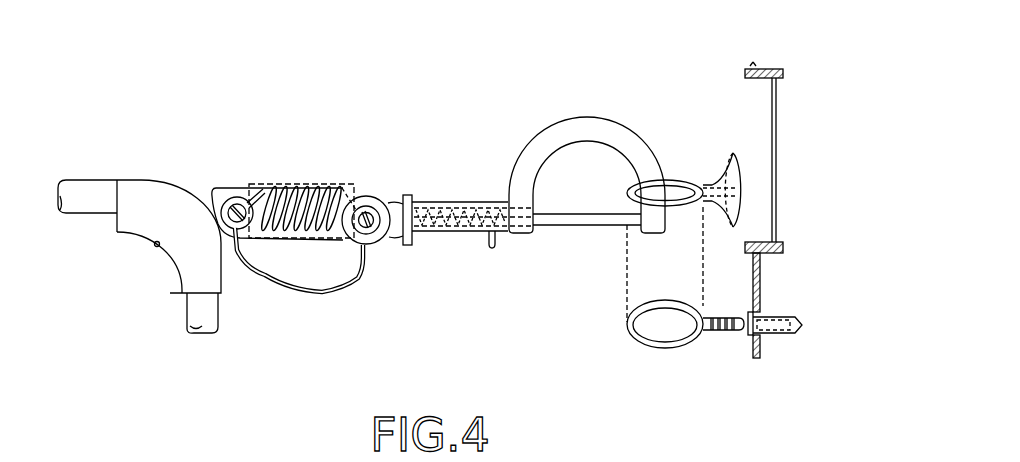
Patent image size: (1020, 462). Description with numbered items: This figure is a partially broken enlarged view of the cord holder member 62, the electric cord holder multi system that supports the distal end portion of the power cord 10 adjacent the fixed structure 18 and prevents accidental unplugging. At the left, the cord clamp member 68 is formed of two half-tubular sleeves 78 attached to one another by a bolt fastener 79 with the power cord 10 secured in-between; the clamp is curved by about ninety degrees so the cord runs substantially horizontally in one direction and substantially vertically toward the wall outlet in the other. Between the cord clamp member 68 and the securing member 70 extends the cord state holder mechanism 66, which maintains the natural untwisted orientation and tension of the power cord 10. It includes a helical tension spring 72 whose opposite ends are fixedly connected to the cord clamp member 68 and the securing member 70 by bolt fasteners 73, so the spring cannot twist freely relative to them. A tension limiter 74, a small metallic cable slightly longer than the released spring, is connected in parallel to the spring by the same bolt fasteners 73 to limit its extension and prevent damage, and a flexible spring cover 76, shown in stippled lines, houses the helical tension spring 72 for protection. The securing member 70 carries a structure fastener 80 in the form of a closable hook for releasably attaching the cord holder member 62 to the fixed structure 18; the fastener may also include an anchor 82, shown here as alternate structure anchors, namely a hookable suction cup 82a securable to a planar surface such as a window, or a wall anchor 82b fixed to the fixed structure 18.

The power cord 10 is at (86, 178).
The cord holder member 62 is at (136, 112).
The cord clamp member 68 is at (200, 173).
The half-tubular sleeves 78 is at (135, 232).
The bolt fastener 79 is at (156, 246).
The helical tension spring 72 is at (288, 186).
The bolt fasteners 73 is at (215, 188).
The cord state holder mechanism 66 is at (318, 169).
The spring cover 76 is at (348, 184).
The tension limiter 74 is at (323, 293).
The securing member 70 is at (464, 188).
The structure fastener 80 is at (582, 118).
The anchor 82 is at (682, 178).
The hookable suction cup 82a is at (738, 153).
The fixed structure 18 is at (752, 283).
The wall anchor 82b is at (743, 335).